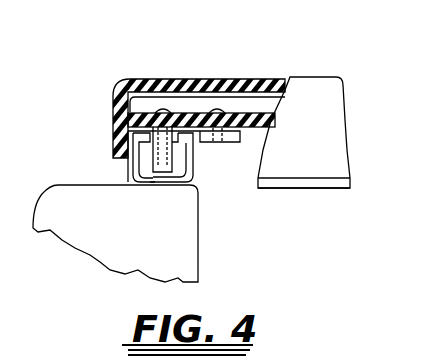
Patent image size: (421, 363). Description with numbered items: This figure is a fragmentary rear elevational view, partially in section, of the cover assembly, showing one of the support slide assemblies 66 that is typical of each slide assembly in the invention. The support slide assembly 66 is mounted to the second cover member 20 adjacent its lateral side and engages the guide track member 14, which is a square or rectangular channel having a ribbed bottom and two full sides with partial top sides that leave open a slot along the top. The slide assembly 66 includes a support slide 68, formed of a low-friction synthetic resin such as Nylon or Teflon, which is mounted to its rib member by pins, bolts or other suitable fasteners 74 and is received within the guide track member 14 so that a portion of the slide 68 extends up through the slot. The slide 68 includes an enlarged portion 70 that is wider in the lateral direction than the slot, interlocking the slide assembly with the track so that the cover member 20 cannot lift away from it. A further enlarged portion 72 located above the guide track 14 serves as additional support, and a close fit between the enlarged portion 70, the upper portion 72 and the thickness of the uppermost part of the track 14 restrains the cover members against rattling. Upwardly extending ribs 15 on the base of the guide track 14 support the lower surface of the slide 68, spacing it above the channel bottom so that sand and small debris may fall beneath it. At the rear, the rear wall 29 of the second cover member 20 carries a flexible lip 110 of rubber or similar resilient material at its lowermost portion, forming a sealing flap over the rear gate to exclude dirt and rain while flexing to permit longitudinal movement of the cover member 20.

The guide track member 14 is at (200, 186).
The upwardly extending ribs 15 is at (205, 183).
The second cover member 20 is at (293, 78).
The rear wall 29 is at (323, 148).
The support slide assembly 66 is at (113, 142).
The support slide 68 is at (140, 186).
The enlarged portion 70 is at (188, 160).
The enlarged portion (upper portion) 72 is at (200, 145).
The fasteners 74 is at (165, 110).
The flexible lip 110 is at (304, 180).